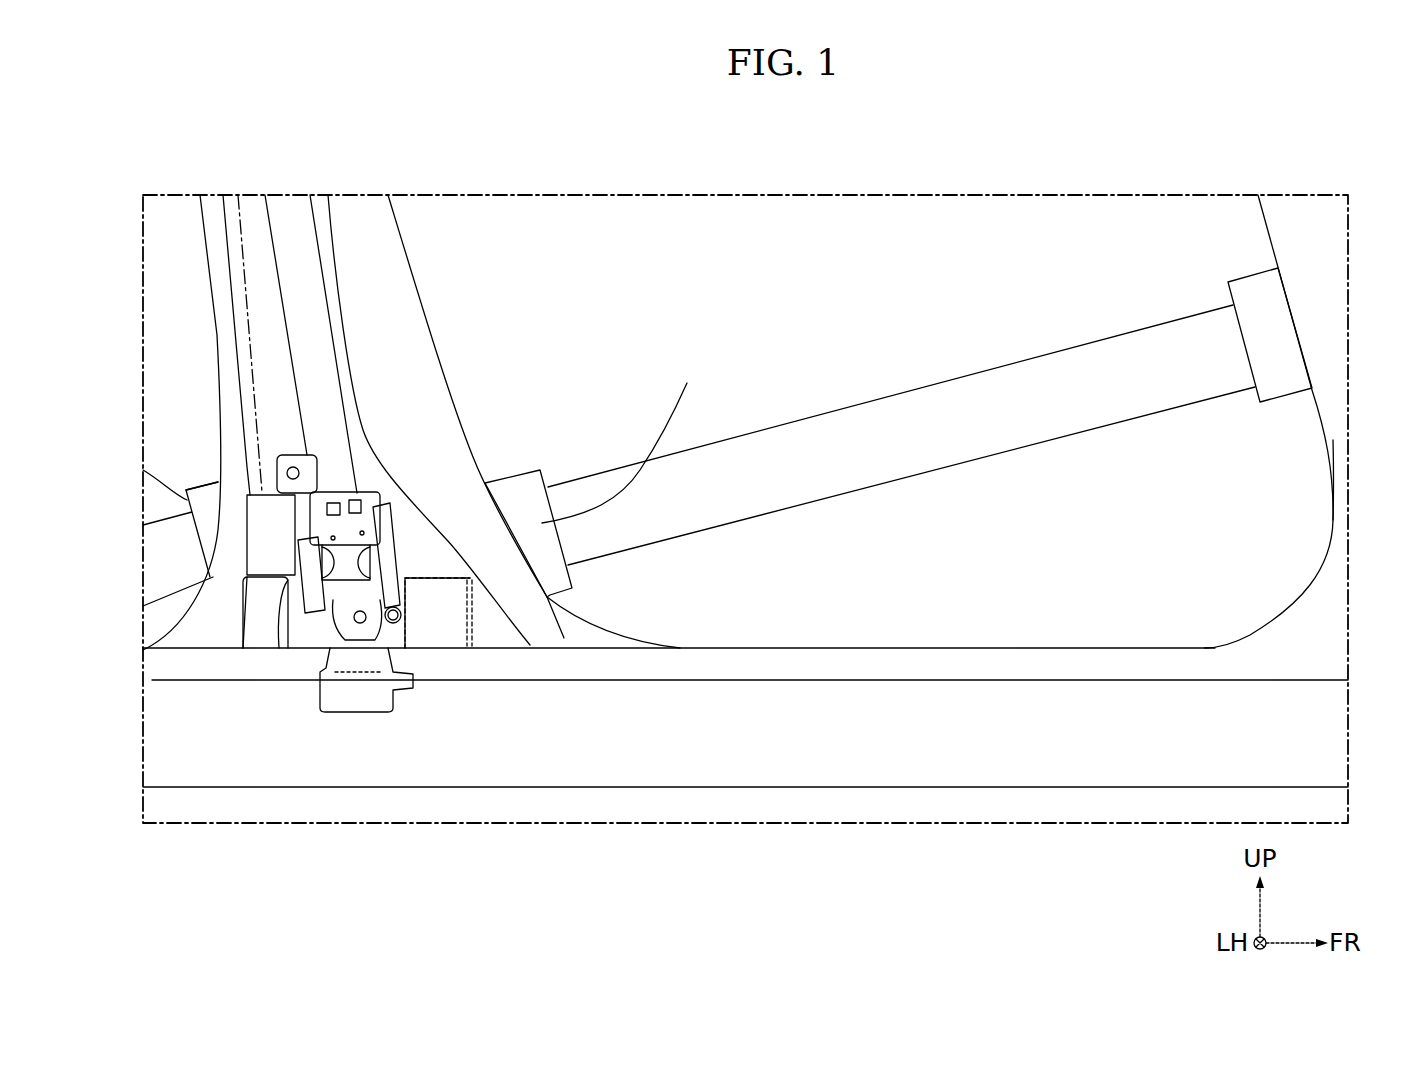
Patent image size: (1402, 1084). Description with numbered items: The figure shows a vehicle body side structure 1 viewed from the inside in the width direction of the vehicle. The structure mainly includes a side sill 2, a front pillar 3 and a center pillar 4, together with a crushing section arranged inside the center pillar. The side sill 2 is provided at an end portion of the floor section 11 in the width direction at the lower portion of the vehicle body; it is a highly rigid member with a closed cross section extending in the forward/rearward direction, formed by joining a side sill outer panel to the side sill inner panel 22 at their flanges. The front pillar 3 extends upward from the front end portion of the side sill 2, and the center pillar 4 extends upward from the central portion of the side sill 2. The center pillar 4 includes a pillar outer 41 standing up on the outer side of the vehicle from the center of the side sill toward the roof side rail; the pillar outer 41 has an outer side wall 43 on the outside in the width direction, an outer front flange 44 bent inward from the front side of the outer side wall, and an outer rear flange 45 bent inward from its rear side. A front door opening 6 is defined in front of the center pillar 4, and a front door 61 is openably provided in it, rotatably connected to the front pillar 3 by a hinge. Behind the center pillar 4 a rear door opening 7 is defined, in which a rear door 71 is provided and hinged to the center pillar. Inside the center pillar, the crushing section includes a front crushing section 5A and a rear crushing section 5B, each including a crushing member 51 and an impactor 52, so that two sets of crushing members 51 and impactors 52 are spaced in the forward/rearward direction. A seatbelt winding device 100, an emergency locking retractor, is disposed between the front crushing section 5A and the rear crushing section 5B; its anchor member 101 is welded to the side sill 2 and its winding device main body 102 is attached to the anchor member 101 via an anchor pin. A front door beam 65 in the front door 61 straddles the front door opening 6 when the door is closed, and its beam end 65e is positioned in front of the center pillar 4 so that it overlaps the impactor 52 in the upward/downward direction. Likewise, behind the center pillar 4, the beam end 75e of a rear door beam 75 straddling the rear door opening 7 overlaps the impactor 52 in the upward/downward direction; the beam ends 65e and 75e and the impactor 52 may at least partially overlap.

The vehicle body side structure 1 is at (950, 272).
The side sill 2 is at (794, 756).
The front pillar 3 is at (1256, 236).
The center pillar 4 is at (404, 282).
The front crushing section 5A is at (402, 478).
The rear crushing section 5B is at (250, 474).
The front door opening 6 is at (1297, 605).
The rear door opening 7 is at (203, 243).
The floor section 11 is at (1012, 787).
The side sill inner panel 22 is at (942, 758).
The pillar outer 41 is at (388, 237).
The outer side wall 43 is at (253, 220).
The outer front flange 44 is at (418, 338).
The outer rear flange 45 is at (217, 335).
The crushing member 51 is at (255, 610).
The impactor 52 is at (257, 533).
The front door 61 is at (1205, 656).
The front door beam 65 is at (862, 420).
The beam end 65e is at (629, 442).
The rear door 71 is at (187, 630).
The rear door beam 75 is at (168, 523).
The beam end 75e is at (212, 500).
The seatbelt winding device 100 is at (374, 470).
The anchor member 101 is at (355, 697).
The winding device main body 102 is at (279, 648).